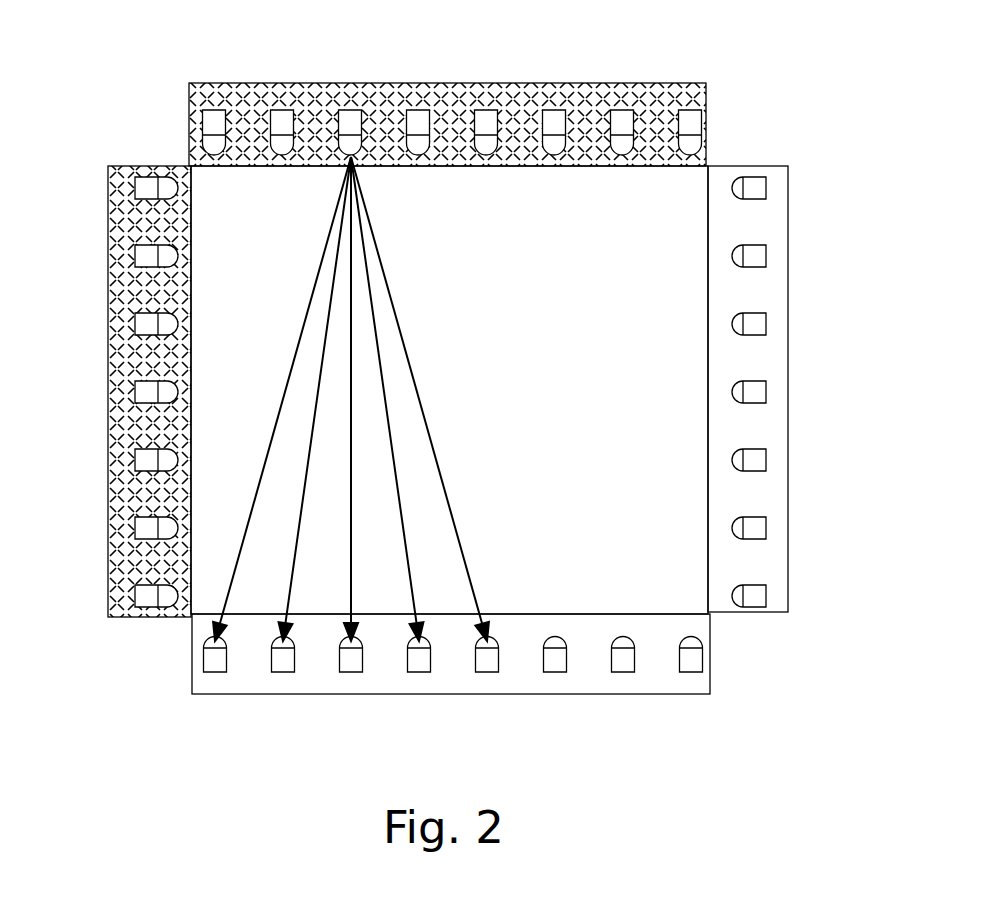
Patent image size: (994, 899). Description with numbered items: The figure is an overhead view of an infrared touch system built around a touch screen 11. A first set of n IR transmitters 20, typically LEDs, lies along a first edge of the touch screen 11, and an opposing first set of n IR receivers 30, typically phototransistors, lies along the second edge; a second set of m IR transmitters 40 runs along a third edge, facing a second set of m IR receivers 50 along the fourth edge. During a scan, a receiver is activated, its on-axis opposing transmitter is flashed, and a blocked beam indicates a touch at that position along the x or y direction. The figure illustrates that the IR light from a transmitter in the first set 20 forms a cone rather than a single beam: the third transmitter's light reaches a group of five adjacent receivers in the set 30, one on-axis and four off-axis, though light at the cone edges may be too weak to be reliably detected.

The touch screen 11 is at (595, 296).
The first set of IR transmitters 20 is at (455, 91).
The first set of IR receivers 30 is at (456, 687).
The second set of IR transmitters 40 is at (103, 391).
The second set of IR receivers 50 is at (796, 389).